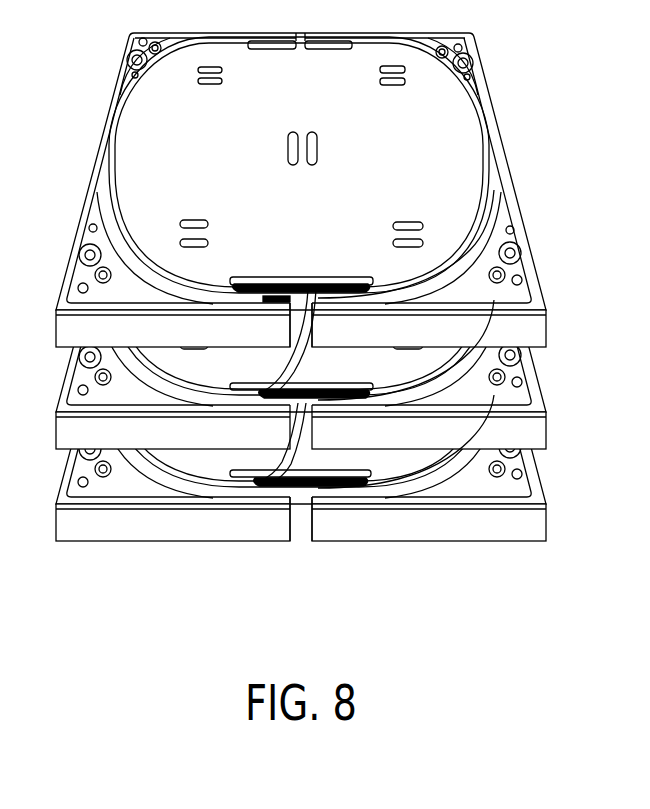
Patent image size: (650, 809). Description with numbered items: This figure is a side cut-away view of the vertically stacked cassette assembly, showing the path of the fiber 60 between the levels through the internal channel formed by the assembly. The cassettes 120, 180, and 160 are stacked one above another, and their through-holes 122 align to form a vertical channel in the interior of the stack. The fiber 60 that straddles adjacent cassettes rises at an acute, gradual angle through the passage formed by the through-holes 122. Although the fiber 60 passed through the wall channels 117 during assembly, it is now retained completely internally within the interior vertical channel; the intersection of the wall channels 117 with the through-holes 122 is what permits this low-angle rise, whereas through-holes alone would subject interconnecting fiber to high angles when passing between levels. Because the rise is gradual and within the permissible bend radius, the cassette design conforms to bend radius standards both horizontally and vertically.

The fiber 60 is at (380, 282).
The wall channels 117 is at (290, 325).
The cassette 120 is at (301, 385).
The through-holes 122 is at (296, 279).
The cassette 160 is at (301, 190).
The cassette 180 is at (301, 293).